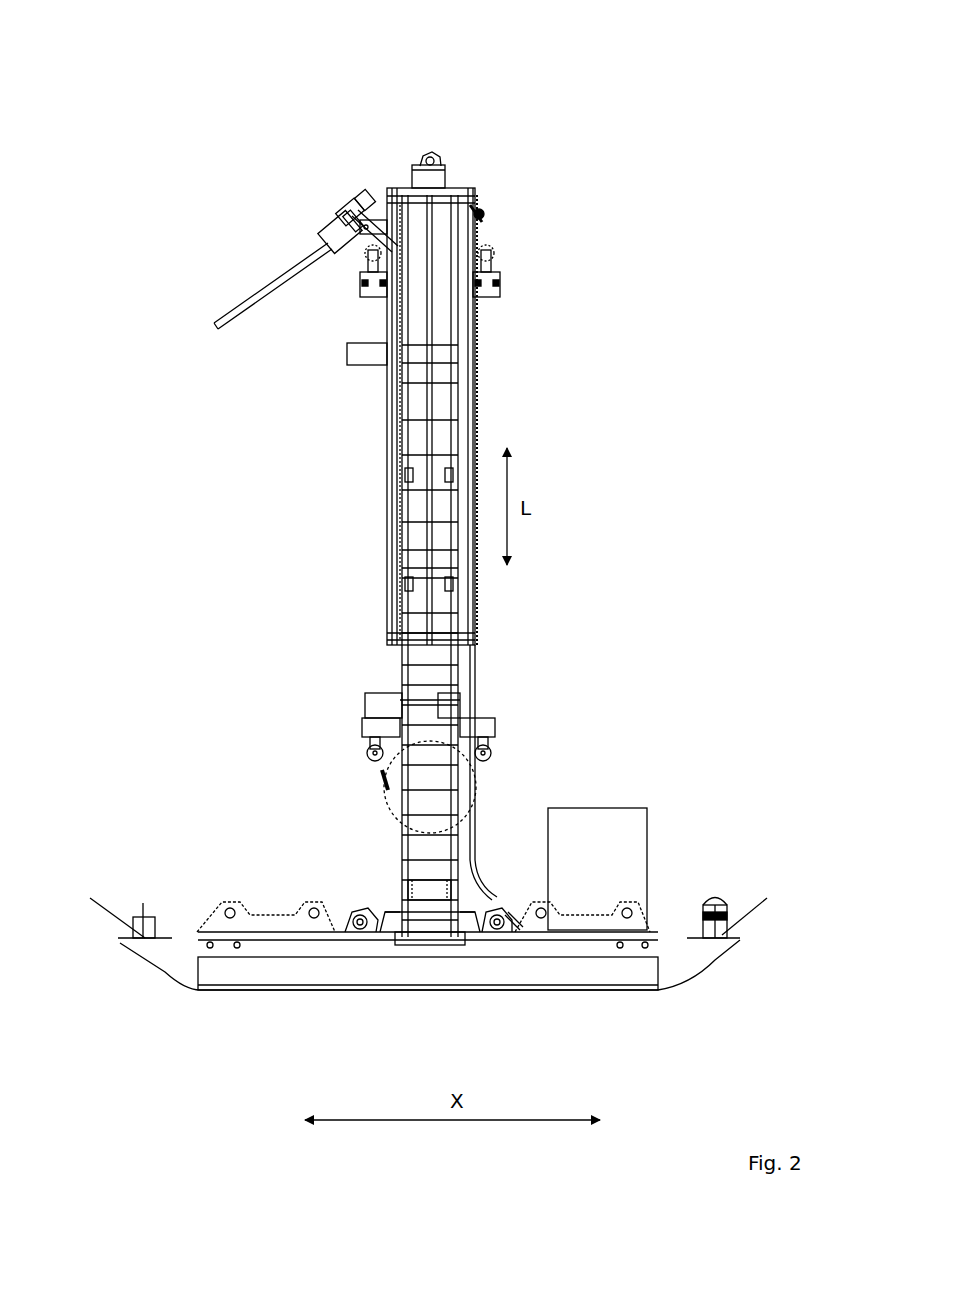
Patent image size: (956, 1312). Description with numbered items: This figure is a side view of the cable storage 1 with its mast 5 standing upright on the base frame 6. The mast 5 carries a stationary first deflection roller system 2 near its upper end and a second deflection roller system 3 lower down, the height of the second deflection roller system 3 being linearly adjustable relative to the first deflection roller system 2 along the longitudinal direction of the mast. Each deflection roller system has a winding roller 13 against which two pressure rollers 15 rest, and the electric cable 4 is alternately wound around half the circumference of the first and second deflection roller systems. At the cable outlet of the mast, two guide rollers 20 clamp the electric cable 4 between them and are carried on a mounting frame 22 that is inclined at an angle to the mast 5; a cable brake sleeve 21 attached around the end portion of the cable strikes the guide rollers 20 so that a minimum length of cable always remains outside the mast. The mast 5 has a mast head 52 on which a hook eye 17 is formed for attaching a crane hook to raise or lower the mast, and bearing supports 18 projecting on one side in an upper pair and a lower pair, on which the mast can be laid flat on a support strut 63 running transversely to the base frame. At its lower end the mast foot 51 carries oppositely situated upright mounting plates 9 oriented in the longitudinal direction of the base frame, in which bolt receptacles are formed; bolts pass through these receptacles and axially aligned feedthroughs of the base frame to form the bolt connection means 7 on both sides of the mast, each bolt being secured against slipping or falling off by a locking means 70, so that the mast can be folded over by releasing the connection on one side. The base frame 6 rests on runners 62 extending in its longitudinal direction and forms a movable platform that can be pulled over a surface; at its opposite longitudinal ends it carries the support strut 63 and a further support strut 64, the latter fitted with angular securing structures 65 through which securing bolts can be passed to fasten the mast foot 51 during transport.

The cable storage 1 is at (674, 90).
The first deflection roller system 2 is at (483, 222).
The second deflection roller system 3 is at (380, 766).
The electric cable 4 is at (232, 305).
The mast 5 is at (470, 203).
The base frame 6 is at (722, 992).
The bolt connection means 7 is at (362, 930).
The mounting plates 9 is at (470, 918).
The winding roller 13 is at (480, 212).
The pressure rollers 15 is at (488, 250).
The hook eye 17 is at (434, 163).
The bearing supports 18 is at (348, 364).
The guide rollers 20 is at (333, 217).
The cable brake sleeve 21 is at (325, 243).
The mounting frame 22 is at (347, 208).
The mast foot 51 is at (392, 918).
The mast head 52 is at (405, 208).
The runners 62 is at (566, 965).
The support strut 63 is at (128, 932).
The support strut 64 is at (728, 933).
The angular securing structures 65 is at (722, 898).
The locking means 70 is at (500, 928).